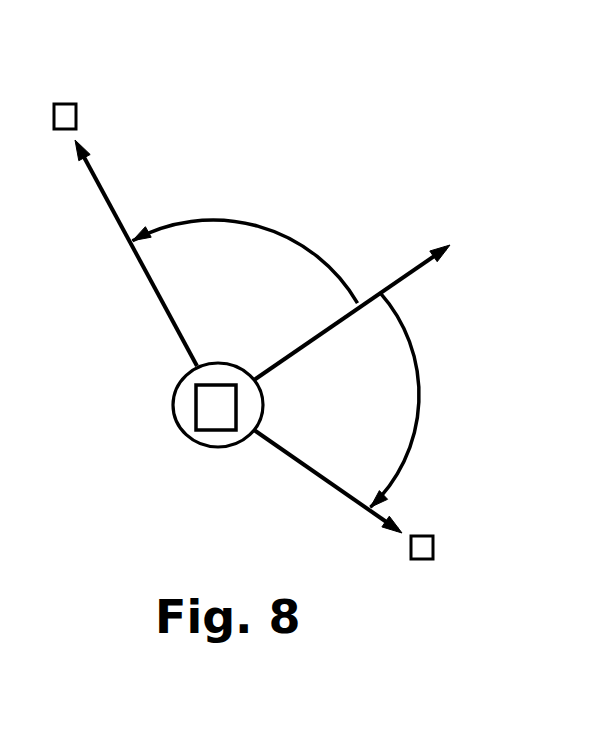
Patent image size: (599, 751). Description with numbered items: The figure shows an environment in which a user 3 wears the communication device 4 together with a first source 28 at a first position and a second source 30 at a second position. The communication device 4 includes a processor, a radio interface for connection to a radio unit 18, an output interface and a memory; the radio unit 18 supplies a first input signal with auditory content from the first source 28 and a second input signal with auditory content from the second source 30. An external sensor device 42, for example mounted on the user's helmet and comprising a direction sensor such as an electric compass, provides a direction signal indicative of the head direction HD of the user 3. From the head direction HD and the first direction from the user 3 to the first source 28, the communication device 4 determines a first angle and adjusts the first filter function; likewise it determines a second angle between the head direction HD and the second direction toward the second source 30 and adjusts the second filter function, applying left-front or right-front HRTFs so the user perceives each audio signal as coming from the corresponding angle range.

The user 3 is at (232, 362).
The communication device 4 is at (223, 453).
The radio unit 18 is at (216, 407).
The external sensor device 42 is at (218, 432).
The first source 28 is at (62, 100).
The second source 30 is at (427, 563).
The head direction HD is at (405, 277).